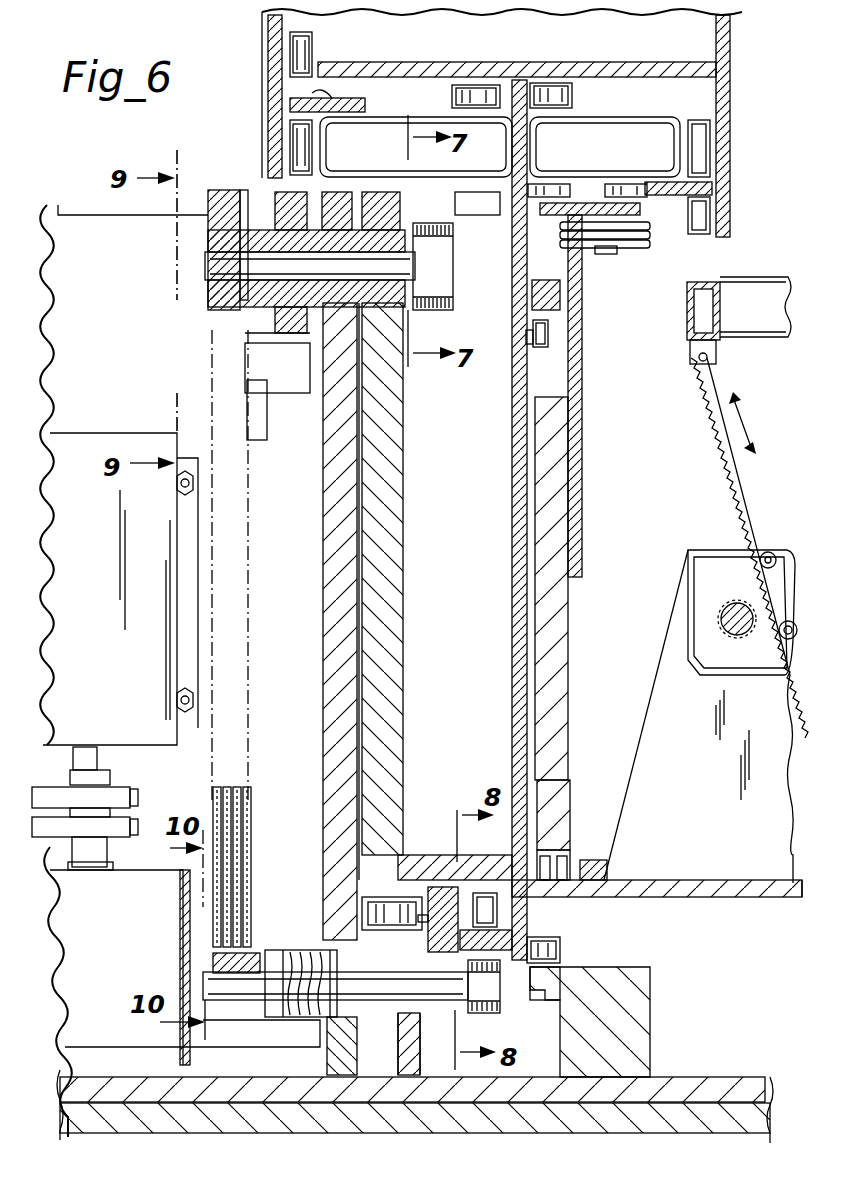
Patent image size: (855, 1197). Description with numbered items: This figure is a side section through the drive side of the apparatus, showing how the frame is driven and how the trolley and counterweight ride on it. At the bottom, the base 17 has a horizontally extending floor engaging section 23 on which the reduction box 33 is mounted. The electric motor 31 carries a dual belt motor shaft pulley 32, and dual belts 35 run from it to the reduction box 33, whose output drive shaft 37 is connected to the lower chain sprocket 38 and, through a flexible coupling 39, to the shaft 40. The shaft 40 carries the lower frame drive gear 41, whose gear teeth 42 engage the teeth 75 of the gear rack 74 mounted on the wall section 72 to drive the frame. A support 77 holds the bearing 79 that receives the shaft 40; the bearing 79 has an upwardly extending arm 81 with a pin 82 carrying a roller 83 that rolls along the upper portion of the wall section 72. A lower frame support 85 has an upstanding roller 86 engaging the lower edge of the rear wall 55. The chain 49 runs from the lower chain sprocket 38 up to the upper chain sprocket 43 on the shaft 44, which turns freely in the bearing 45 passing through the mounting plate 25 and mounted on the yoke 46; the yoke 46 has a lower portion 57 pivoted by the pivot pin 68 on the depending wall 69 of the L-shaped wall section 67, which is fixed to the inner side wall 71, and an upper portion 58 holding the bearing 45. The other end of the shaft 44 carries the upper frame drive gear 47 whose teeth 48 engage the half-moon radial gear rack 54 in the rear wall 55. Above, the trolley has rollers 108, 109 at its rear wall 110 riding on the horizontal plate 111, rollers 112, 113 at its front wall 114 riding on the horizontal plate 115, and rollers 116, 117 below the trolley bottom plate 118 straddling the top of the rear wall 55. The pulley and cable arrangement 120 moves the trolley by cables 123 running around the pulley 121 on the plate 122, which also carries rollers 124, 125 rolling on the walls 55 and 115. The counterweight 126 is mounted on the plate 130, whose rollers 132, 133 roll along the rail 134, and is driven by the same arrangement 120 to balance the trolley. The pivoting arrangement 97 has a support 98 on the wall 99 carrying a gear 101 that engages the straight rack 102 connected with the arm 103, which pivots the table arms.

The rear wall 110 is at (268, 50).
The roller 108 is at (292, 58).
The inwardly directed horizontal plate 111 is at (283, 95).
The roller 109 is at (292, 145).
The trolley bottom plate 118 is at (666, 62).
The roller 116 is at (482, 85).
The roller 117 is at (550, 83).
The inner side wall 71 is at (512, 470).
The front wall 114 is at (730, 108).
The roller 112 is at (710, 140).
The inwardly directed horizontal plate 115 is at (712, 189).
The roller 113 is at (710, 214).
The roller 124 is at (580, 160).
The roller 125 is at (645, 160).
The plate 122 is at (622, 206).
The cables 123 is at (648, 242).
The pulley 121 is at (606, 255).
The roller 132 is at (531, 285).
The rail 134 is at (583, 333).
The pulley and cable arrangement 120 is at (600, 288).
The roller 133 is at (522, 340).
The plate 130 is at (582, 440).
The counterweight 126 is at (568, 633).
The pin 82 is at (568, 781).
The roller 83 is at (556, 851).
The wall section 72 is at (592, 862).
The wall 99 is at (766, 897).
The upper chain sprocket 43 is at (245, 190).
The bearing 45 is at (323, 345).
The shaft 44 is at (210, 270).
The radial gear rack 54 is at (477, 203).
The upper frame drive gear 47 is at (453, 300).
The teeth 48 is at (408, 320).
The yoke 46 is at (393, 543).
The mounting plate 25 is at (323, 565).
The upper portion 58 is at (403, 396).
The lower portion 57 is at (403, 786).
The rear wall 55 is at (512, 590).
The L-shaped wall section 67 is at (455, 855).
The arm 81 is at (490, 858).
The pivot pin 68 is at (374, 910).
The depending wall 69 is at (418, 921).
The teeth 75 is at (562, 937).
The gear rack 74 is at (520, 935).
The roller 86 is at (560, 946).
The lower frame drive gear 41 is at (556, 967).
The lower frame support 85 is at (650, 1020).
The lower chain sprocket 38 is at (246, 955).
The chain 49 is at (250, 830).
The output drive shaft 37 is at (216, 960).
The gear teeth 42 is at (490, 1013).
The shaft 40 is at (396, 1002).
The support 77 is at (410, 1076).
The bearing 79 is at (418, 1062).
The flexible coupling 39 is at (286, 1047).
The base 17 is at (735, 1077).
The floor engaging section 23 is at (206, 1133).
The arm 103 is at (750, 308).
The straight rack 102 is at (781, 486).
The pivoting arrangement 97 is at (710, 510).
The gear 101 is at (722, 618).
The support 98 is at (656, 696).
The electric motor 31 is at (95, 617).
The dual belt motor shaft pulley 32 is at (112, 775).
The dual belts 35 is at (138, 806).
The reduction box 33 is at (118, 983).